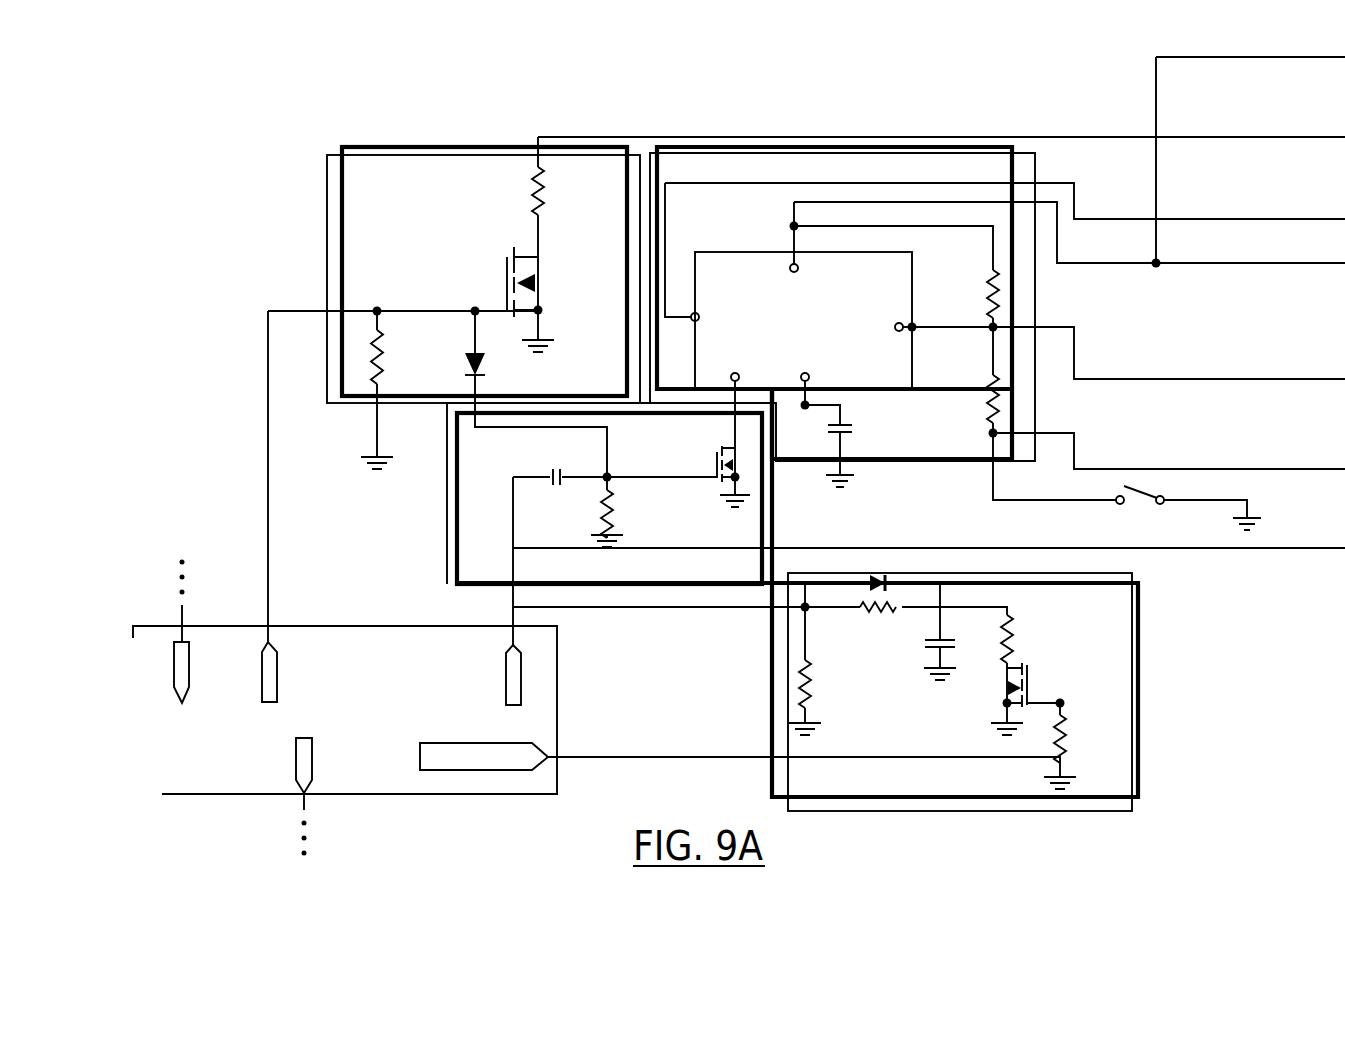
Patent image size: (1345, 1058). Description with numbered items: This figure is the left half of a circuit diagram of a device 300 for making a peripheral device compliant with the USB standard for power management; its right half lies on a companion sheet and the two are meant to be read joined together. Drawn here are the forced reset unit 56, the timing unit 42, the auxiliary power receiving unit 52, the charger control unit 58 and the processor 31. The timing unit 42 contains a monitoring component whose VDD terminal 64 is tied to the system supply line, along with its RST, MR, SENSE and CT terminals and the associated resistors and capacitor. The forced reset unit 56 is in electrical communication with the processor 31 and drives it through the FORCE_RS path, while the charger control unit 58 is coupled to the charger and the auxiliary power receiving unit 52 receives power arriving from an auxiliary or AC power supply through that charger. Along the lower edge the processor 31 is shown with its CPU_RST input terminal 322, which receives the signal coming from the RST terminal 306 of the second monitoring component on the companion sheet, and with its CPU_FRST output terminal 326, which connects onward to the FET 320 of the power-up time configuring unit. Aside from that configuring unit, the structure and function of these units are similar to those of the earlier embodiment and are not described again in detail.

The device 300 is at (207, 143).
The forced reset unit 56 is at (427, 153).
The timing unit 42 is at (768, 153).
The VDD terminal 64 is at (789, 268).
The auxiliary power receiving unit 52 is at (445, 572).
The charger control unit 58 is at (1138, 668).
The processor 31 is at (397, 794).
The CPU_RST input terminal 322 is at (174, 673).
The CPU_FRST output terminal 326 is at (296, 755).
The RST terminal 306 is at (178, 526).
The FET 320 is at (258, 837).